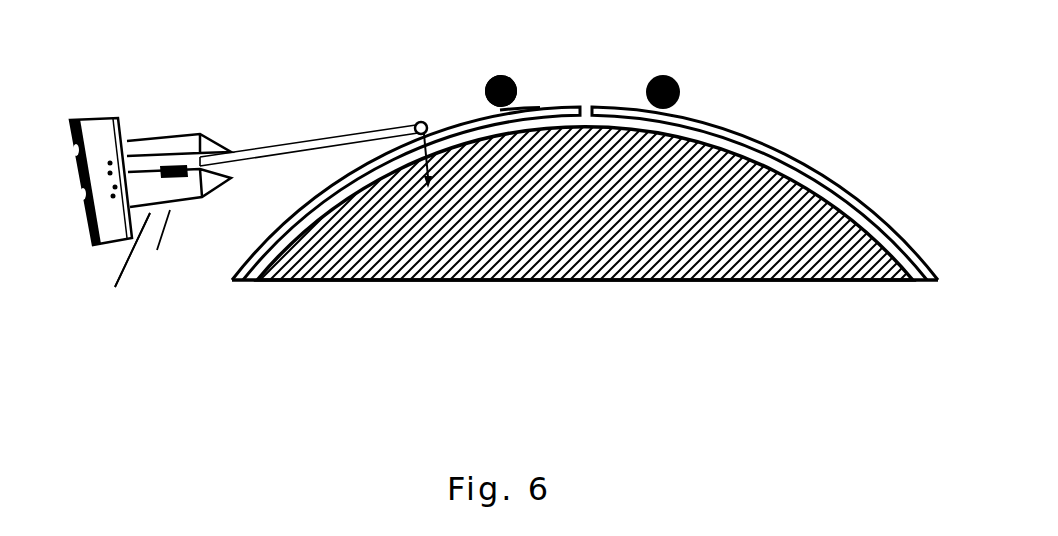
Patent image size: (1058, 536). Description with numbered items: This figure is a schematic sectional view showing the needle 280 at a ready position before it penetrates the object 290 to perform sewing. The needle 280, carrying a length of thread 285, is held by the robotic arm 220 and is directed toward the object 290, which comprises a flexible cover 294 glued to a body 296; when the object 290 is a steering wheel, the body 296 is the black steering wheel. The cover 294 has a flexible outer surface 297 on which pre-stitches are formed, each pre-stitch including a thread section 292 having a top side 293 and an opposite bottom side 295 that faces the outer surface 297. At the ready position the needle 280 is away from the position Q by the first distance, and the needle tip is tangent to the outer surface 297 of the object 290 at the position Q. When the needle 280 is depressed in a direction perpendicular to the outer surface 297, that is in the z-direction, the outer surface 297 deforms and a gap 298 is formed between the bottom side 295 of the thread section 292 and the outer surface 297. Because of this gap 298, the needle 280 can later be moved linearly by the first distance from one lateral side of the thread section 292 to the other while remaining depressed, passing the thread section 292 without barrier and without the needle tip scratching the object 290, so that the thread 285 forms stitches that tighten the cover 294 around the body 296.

The robotic arm 220 is at (156, 100).
The needle 280 is at (288, 158).
The thread 285 is at (150, 213).
The object 290 is at (585, 164).
The thread section 292 is at (674, 80).
The top side 293 is at (491, 78).
The position Q is at (514, 79).
The flexible cover 294 is at (800, 177).
The bottom side 295 is at (481, 100).
The body 296 is at (605, 248).
The outer surface 297 is at (600, 105).
The gap 298 is at (518, 105).